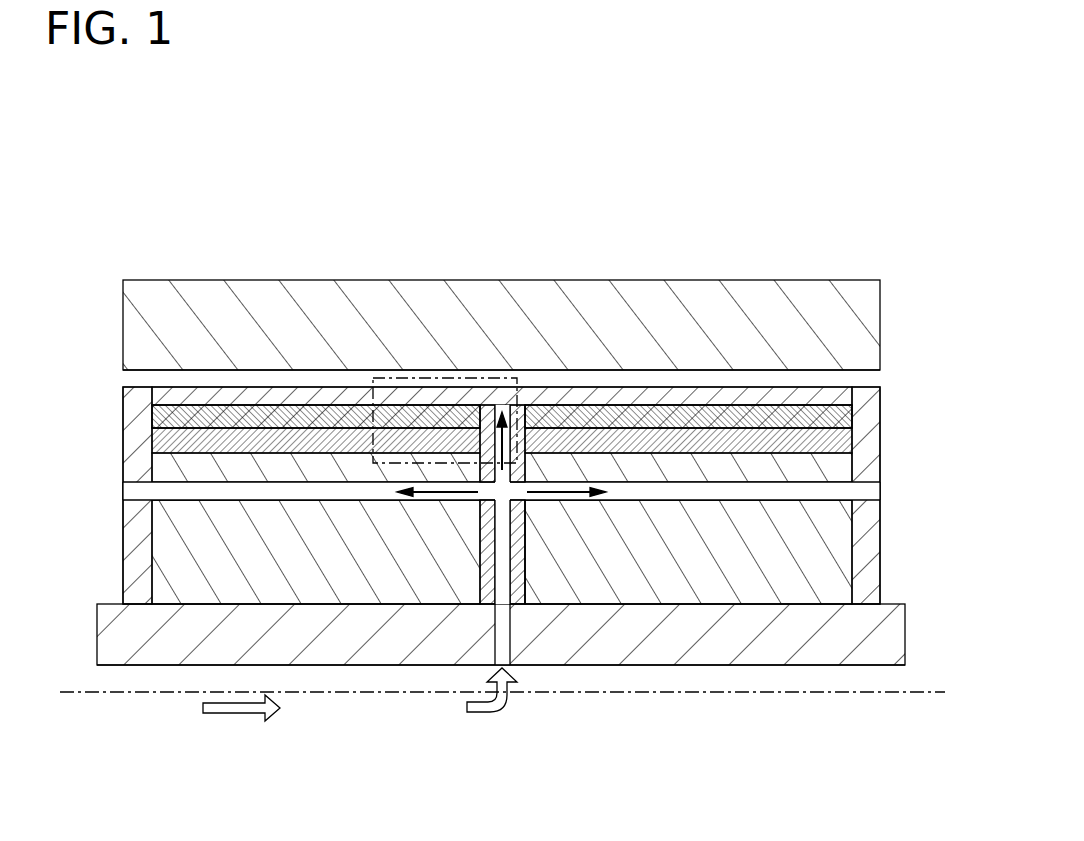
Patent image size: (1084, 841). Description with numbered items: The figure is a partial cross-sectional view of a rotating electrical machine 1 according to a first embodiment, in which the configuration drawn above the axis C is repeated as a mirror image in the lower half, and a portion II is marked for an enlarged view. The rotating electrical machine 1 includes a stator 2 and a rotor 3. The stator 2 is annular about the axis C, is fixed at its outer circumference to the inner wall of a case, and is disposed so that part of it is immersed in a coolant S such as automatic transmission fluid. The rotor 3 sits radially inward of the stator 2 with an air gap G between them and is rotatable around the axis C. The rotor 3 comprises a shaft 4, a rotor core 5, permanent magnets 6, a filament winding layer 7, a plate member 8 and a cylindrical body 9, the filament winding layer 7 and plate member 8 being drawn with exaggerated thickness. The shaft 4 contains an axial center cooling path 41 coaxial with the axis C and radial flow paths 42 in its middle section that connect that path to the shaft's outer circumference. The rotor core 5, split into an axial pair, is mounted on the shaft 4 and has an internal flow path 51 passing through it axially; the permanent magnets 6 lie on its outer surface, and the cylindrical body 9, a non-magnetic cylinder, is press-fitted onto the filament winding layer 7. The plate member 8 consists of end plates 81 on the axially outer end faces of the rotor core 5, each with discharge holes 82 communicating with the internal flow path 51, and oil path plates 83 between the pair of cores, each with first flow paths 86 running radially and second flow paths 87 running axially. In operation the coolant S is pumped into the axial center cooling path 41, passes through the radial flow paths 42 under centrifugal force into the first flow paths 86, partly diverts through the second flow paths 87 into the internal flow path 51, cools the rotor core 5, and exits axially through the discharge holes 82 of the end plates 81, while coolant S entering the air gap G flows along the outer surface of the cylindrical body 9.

The rotating electrical machine 1 is at (760, 222).
The stator 2 is at (305, 292).
The rotor 3 is at (502, 494).
The shaft 4 is at (501, 703).
The axial center cooling path 41 is at (395, 666).
The radial flow paths 42 is at (507, 643).
The rotor core 5 is at (810, 563).
The internal flow path 51 is at (242, 498).
The permanent magnets 6 is at (238, 442).
The filament winding layer 7 is at (267, 418).
The plate member 8 is at (502, 494).
The end plates 81 is at (137, 442).
The discharge holes 82 is at (147, 487).
The oil path plates 83 is at (515, 563).
The first flow paths 86 is at (507, 577).
The second flow paths 87 is at (565, 570).
The cylindrical body 9 is at (625, 399).
The air gap G is at (830, 377).
The coolant S is at (436, 495).
The axis C is at (873, 692).
The portion II is at (450, 378).